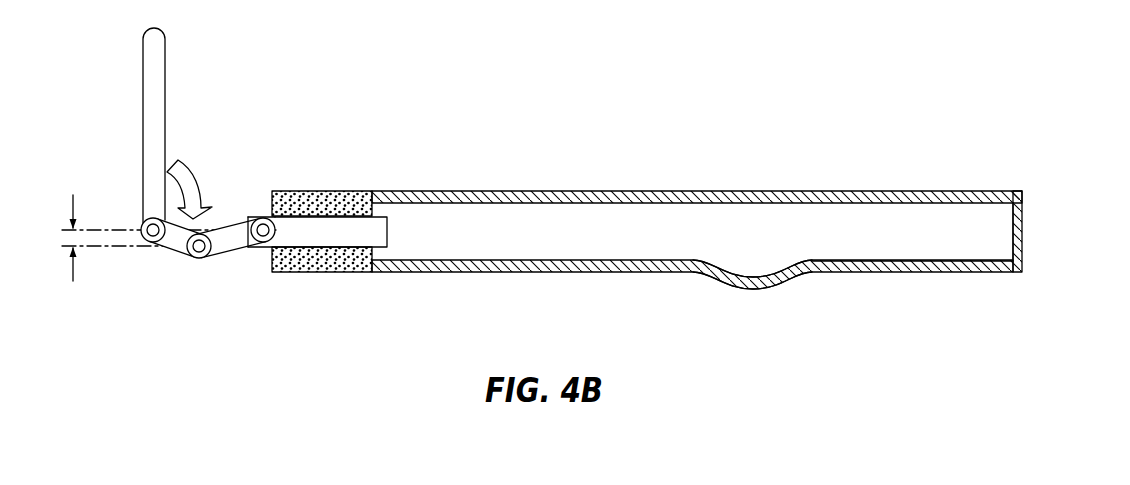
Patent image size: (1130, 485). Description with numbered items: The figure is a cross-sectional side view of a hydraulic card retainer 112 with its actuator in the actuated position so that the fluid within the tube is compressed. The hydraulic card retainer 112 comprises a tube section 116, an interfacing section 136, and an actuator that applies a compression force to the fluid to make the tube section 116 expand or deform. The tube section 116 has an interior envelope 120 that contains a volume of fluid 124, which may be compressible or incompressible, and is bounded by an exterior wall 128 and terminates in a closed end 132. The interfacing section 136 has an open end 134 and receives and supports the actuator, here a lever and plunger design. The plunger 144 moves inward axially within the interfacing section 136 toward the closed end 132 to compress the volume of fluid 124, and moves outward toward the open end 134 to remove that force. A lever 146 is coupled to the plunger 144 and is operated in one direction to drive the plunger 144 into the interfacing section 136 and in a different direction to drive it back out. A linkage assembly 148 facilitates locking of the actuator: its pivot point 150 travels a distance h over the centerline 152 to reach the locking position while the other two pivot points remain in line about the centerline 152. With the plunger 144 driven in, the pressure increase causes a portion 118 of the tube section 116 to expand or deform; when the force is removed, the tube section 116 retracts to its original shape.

The hydraulic card retainer 112 is at (300, 99).
The tube section 116 is at (729, 169).
The portion of the tube section 118 is at (765, 284).
The interior envelope 120 is at (965, 262).
The volume of fluid 124 is at (697, 233).
The exterior wall 128 is at (627, 272).
The closed end 132 is at (1022, 229).
The open end 134 is at (257, 199).
The interfacing section 136 is at (332, 175).
The plunger 144 is at (333, 232).
The lever 146 is at (152, 81).
The linkage assembly 148 is at (182, 283).
The pivot point 150 is at (203, 257).
The centerline 152 is at (120, 228).